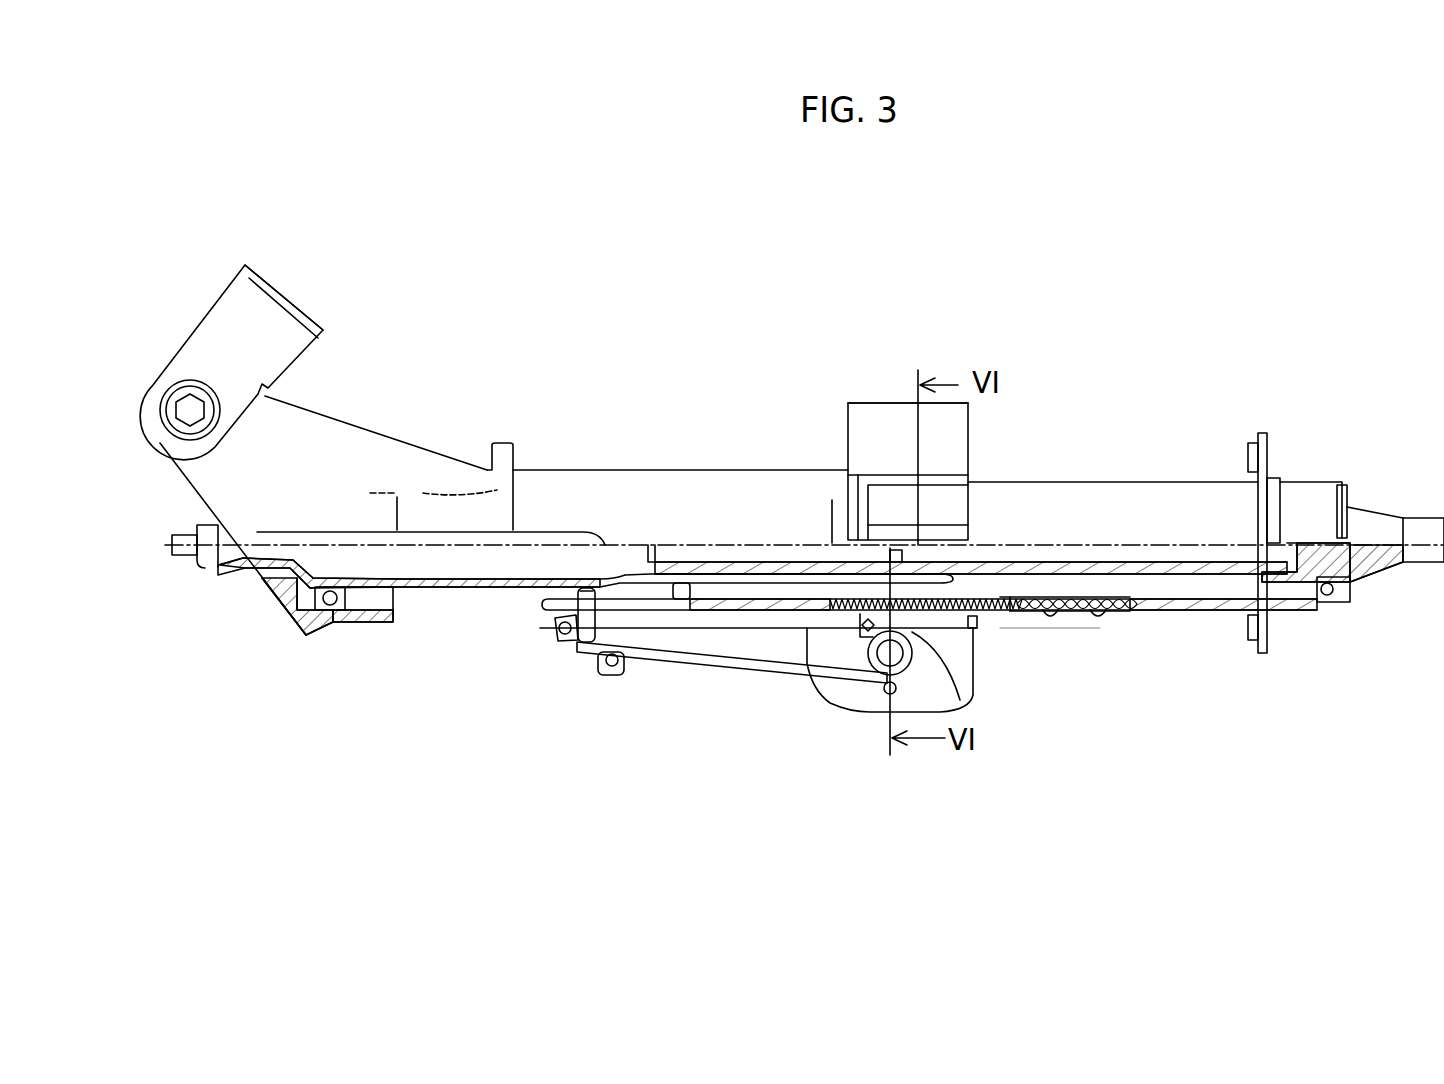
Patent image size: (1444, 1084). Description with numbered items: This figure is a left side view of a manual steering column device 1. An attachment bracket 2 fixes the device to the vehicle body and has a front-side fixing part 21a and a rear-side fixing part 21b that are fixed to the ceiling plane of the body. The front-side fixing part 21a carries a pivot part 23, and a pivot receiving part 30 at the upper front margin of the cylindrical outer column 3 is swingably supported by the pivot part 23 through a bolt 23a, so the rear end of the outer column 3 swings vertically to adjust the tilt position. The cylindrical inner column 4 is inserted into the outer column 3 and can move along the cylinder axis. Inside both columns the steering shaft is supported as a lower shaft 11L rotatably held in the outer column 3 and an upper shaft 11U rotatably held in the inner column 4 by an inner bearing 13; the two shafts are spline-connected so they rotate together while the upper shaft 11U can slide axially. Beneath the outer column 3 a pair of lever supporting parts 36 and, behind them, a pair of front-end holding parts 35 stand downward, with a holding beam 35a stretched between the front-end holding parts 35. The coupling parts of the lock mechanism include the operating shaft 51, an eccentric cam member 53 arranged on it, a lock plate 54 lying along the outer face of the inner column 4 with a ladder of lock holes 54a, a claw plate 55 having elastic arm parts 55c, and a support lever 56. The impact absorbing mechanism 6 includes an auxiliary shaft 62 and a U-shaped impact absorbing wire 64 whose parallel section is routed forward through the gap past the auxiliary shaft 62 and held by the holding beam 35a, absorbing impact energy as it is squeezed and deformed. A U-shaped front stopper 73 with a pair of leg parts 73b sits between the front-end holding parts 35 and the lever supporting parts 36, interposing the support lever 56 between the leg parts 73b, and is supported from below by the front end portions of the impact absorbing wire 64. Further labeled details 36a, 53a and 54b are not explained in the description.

The steering column device 1 is at (976, 325).
The attachment bracket 2 is at (302, 304).
The outer column 3 is at (683, 468).
The inner column 4 is at (1175, 483).
The impact absorbing mechanism 6 is at (1135, 660).
The lower shaft 11L is at (207, 575).
The upper shaft 11U is at (1368, 512).
The inner bearing 13 is at (1330, 603).
The front-side fixing part 21a is at (250, 290).
The rear-side fixing part 21b is at (858, 402).
The pivot part 23 is at (165, 388).
The bolt 23a is at (158, 440).
The pivot receiving part 30 is at (305, 428).
The front-end holding parts 35 is at (605, 675).
The holding beam 35a is at (625, 668).
The lever supporting parts 36 is at (560, 645).
The stopper pin 36a is at (552, 632).
The operating shaft 51 is at (913, 632).
The eccentric cam member 53 is at (857, 664).
The housing portion 53a is at (917, 663).
The lock plate 54 is at (1125, 612).
The lock holes 54a is at (1050, 599).
The second thread portion 54b is at (1100, 599).
The claw plate 55 is at (1040, 612).
The elastic arm parts 55c is at (1010, 597).
The support lever 56 is at (977, 630).
The auxiliary shaft 62 is at (887, 695).
The impact absorbing wire 64 is at (756, 665).
The front stopper 73 is at (585, 650).
The leg parts 73b is at (586, 588).